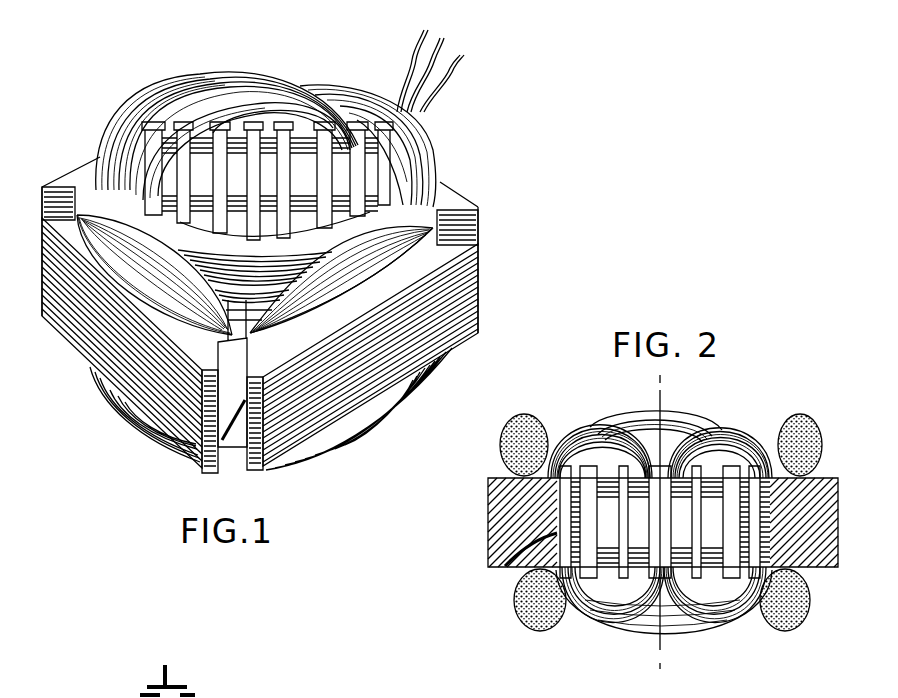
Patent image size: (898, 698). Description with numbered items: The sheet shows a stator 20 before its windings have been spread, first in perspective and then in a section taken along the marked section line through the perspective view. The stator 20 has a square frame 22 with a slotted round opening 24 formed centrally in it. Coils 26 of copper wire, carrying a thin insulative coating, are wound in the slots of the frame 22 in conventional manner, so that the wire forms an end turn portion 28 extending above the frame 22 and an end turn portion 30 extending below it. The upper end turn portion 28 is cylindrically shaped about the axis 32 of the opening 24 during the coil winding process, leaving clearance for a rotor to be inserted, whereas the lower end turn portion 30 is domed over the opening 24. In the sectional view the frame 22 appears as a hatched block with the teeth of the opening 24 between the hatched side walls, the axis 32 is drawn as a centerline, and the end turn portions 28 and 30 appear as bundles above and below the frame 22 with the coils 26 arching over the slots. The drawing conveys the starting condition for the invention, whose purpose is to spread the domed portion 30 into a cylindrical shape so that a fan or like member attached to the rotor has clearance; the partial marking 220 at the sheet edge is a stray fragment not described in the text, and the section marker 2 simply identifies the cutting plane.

In FIG. 1, the stator 20 is at (464, 186).
In FIG. 2, the stator 20 is at (728, 413).
In FIG. 1, the square frame 22 is at (82, 333).
In FIG. 2, the square frame 22 is at (493, 511).
In FIG. 1, the slotted round opening 24 is at (158, 126).
In FIG. 2, the slotted round opening 24 is at (507, 565).
In FIG. 1, the coils 26 is at (340, 72).
In FIG. 2, the coils 26 is at (636, 444).
In FIG. 1, the end turn portion 28 is at (435, 140).
In FIG. 2, the end turn portion 28 is at (800, 417).
In FIG. 1, the end turn portion 30 is at (362, 428).
In FIG. 2, the end turn portion 30 is at (795, 622).
In FIG. 2, the axis 32 is at (660, 645).
In FIG. 1, the section line 2 is at (76, 109).
In FIG. 1, the stray marking 220 is at (198, 689).